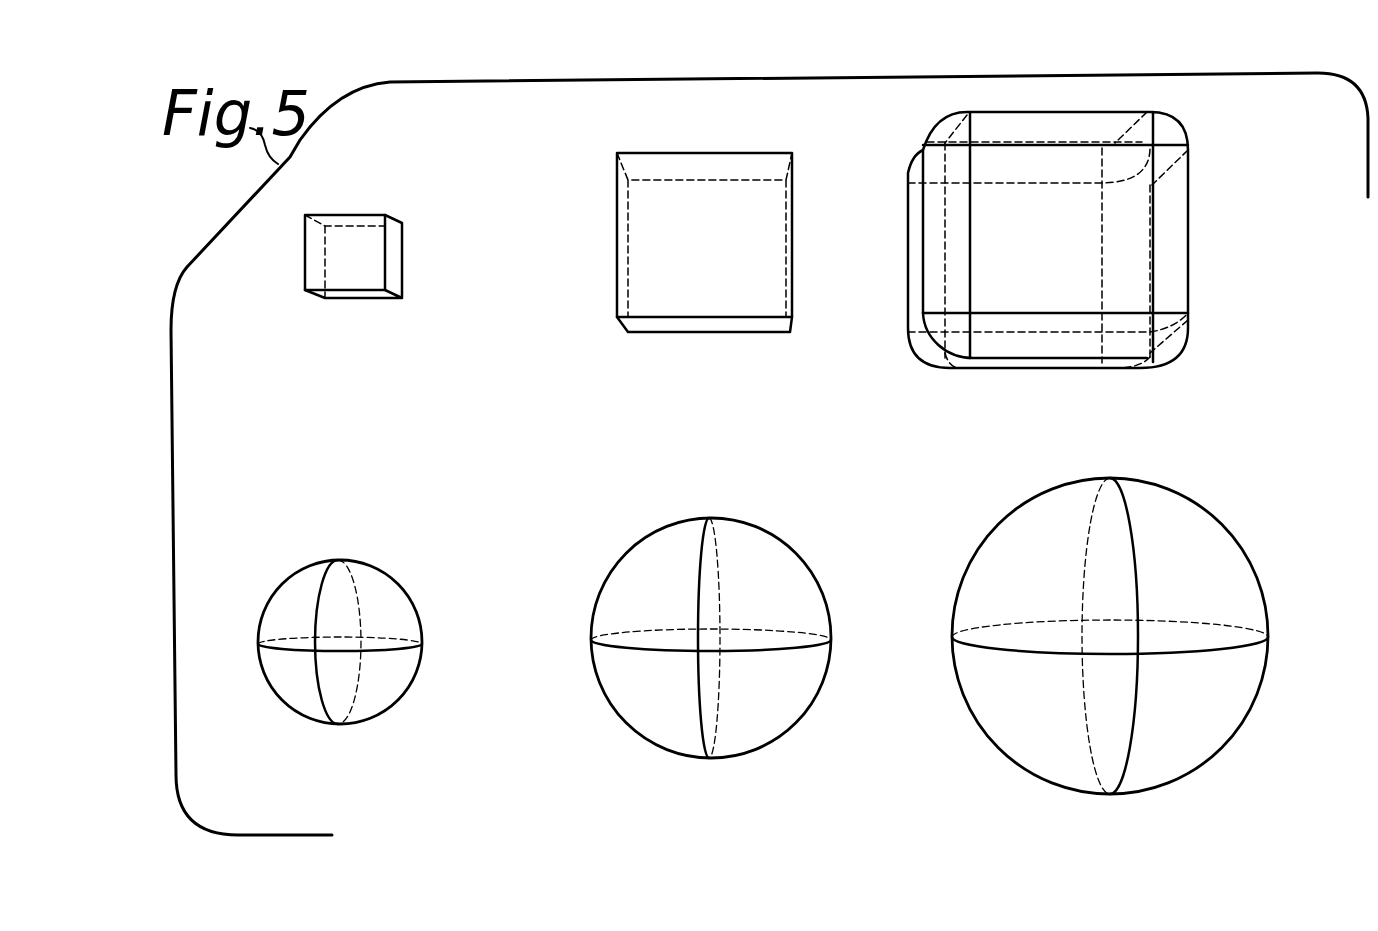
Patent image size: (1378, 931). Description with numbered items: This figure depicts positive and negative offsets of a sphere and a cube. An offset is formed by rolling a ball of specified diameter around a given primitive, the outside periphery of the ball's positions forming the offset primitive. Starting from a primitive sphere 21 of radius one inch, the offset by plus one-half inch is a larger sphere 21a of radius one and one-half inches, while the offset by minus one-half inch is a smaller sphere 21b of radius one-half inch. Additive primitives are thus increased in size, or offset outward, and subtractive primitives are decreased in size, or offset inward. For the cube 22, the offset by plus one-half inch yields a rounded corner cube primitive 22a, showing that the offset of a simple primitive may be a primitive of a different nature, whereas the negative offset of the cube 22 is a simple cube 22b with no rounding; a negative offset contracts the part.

The primitive sphere 21 is at (807, 570).
The sphere of radius 1.5 inches 21a is at (1222, 528).
The sphere of radius 0.5 inches 21b is at (405, 600).
The cube 22 is at (717, 157).
The rounded corner cube primitive 22a is at (1185, 184).
The simple cube 22b is at (358, 218).